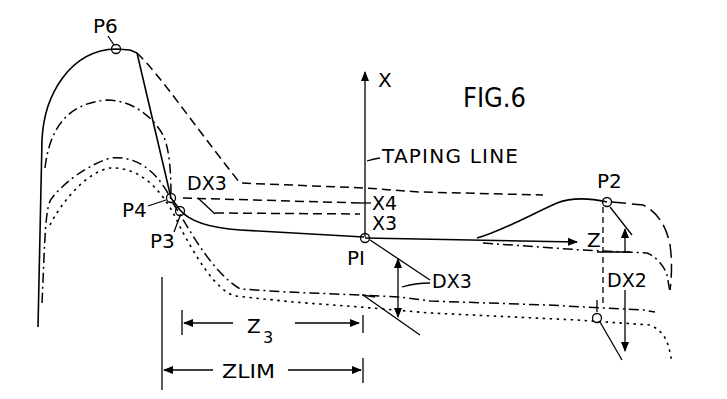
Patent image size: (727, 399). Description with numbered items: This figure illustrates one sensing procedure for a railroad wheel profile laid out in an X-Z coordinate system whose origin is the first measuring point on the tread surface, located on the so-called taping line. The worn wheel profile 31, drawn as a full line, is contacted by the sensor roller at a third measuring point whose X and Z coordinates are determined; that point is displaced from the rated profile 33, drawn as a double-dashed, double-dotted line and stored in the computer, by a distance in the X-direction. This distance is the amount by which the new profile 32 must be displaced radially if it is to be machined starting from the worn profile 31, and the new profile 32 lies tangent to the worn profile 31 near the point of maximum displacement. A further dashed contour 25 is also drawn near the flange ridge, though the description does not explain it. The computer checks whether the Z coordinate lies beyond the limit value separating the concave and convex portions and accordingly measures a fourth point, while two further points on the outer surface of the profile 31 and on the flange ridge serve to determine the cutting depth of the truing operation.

The outer dashed contour layer 25 is at (132, 50).
The worn wheel profile 31 is at (163, 134).
The new profile 32 is at (510, 315).
The rated profile 33 is at (552, 305).